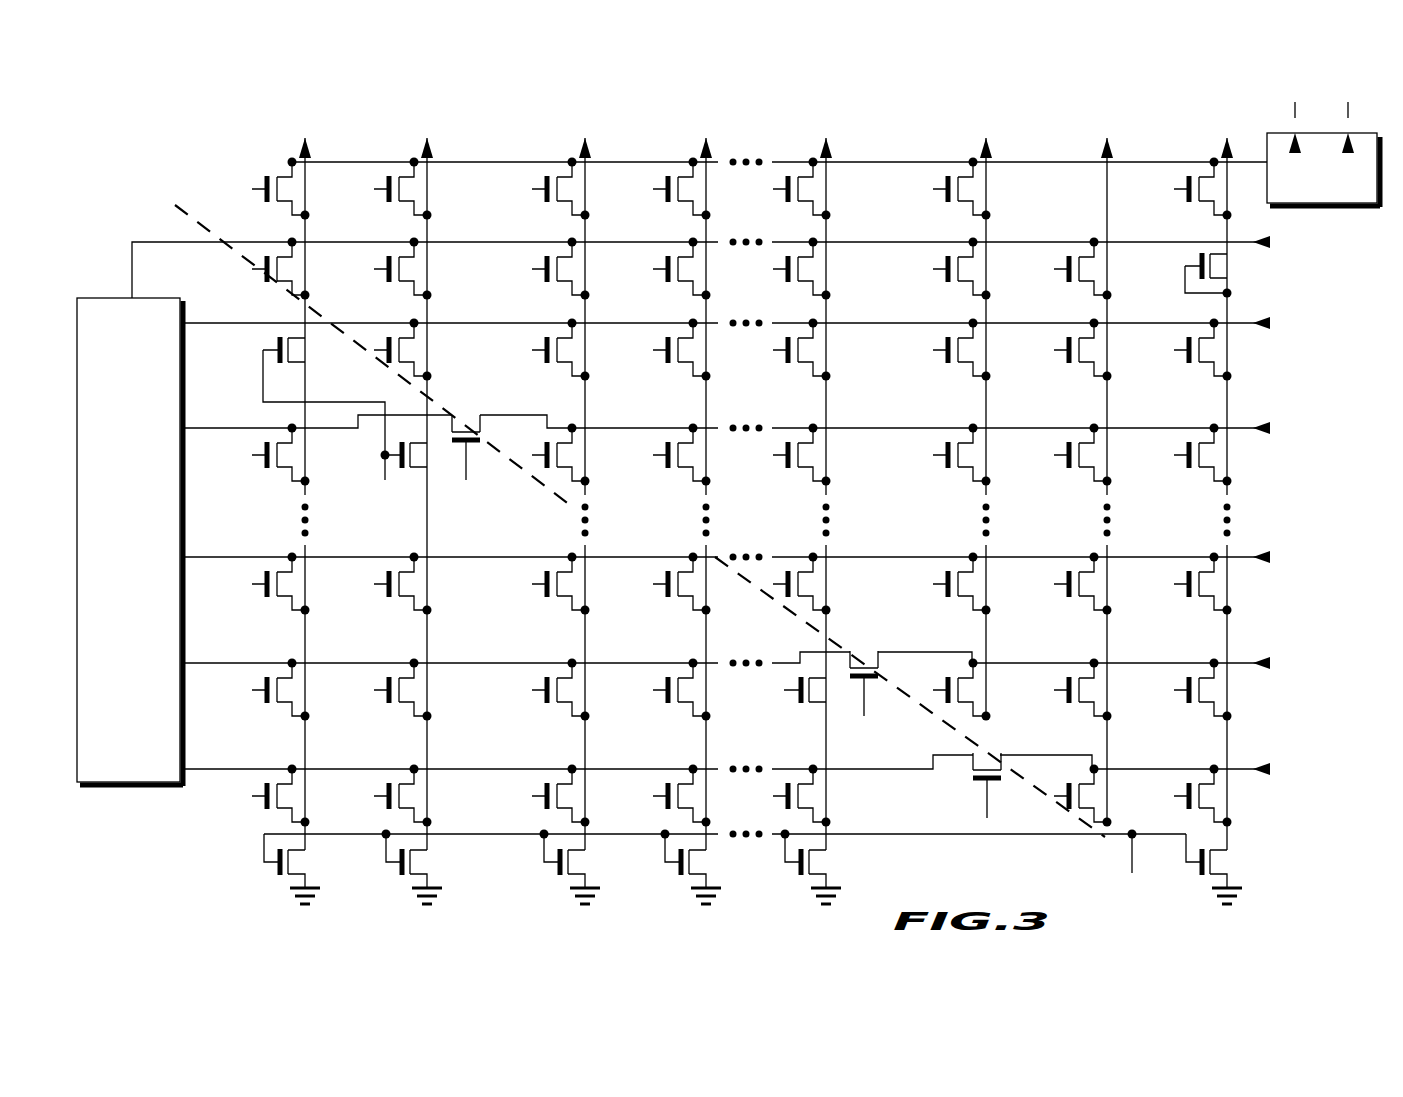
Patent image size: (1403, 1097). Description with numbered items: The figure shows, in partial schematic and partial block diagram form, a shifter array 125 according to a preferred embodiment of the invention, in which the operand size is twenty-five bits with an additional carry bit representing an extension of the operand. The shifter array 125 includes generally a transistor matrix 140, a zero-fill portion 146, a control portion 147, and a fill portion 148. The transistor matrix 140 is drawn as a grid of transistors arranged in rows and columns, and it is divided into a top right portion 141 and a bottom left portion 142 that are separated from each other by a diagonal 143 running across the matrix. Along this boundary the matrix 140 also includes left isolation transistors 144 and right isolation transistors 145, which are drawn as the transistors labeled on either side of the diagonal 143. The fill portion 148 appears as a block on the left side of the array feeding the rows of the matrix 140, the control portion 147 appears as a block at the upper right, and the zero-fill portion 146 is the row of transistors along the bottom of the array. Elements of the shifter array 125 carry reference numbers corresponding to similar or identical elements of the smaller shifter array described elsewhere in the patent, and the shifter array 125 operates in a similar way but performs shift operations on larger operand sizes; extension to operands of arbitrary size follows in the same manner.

The shifter array 125 is at (723, 489).
The transistor matrix 140 is at (723, 489).
The top right portion 141 is at (1254, 397).
The bottom left portion 142 is at (110, 282).
The diagonal 143 is at (174, 207).
The left isolation transistors 144 is at (280, 312).
The right isolation transistors 145 is at (477, 398).
The zero-fill portion 146 is at (178, 842).
The control portion 147 is at (1297, 204).
The fill portion 148 is at (160, 648).